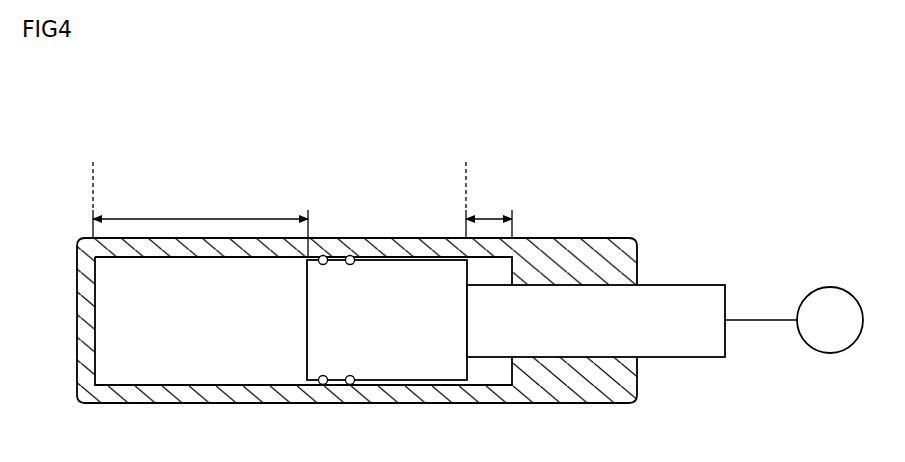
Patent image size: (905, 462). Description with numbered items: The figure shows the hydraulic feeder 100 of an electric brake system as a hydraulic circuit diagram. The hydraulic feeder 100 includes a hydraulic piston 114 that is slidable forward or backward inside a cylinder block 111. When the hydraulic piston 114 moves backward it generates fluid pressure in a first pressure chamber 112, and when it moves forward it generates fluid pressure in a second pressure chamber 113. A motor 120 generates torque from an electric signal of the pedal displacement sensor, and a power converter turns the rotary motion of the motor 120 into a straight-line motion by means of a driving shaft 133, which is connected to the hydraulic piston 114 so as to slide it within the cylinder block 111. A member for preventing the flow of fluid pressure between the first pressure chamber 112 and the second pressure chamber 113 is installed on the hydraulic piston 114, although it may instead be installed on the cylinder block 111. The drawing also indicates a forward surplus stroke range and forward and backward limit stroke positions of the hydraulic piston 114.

The hydraulic feeder 100 is at (700, 182).
The cylinder block 111 is at (366, 248).
The first pressure chamber 112 is at (121, 327).
The second pressure chamber 113 is at (498, 366).
The hydraulic piston 114 is at (401, 371).
The driving shaft 133 is at (683, 345).
The motor 120 is at (833, 288).